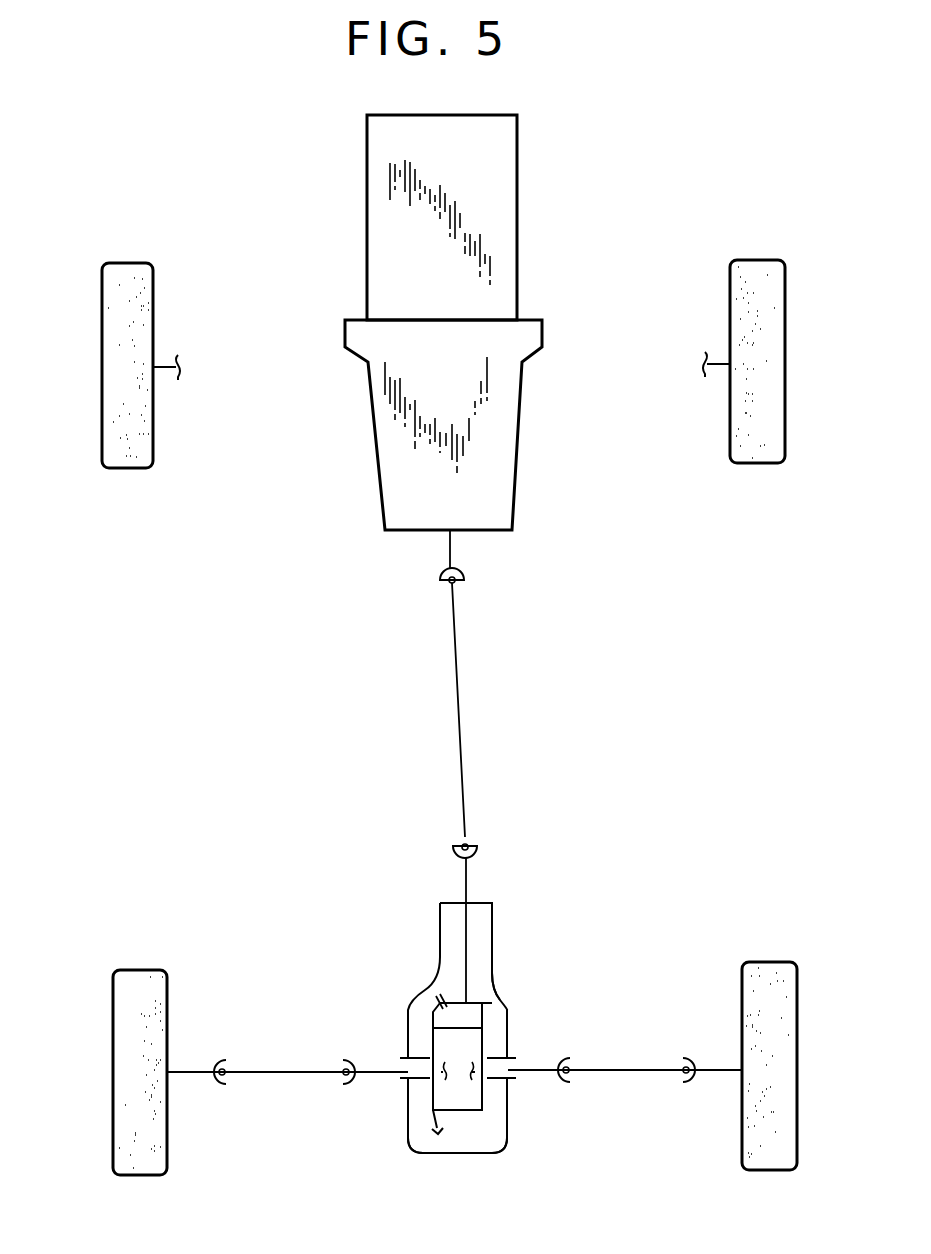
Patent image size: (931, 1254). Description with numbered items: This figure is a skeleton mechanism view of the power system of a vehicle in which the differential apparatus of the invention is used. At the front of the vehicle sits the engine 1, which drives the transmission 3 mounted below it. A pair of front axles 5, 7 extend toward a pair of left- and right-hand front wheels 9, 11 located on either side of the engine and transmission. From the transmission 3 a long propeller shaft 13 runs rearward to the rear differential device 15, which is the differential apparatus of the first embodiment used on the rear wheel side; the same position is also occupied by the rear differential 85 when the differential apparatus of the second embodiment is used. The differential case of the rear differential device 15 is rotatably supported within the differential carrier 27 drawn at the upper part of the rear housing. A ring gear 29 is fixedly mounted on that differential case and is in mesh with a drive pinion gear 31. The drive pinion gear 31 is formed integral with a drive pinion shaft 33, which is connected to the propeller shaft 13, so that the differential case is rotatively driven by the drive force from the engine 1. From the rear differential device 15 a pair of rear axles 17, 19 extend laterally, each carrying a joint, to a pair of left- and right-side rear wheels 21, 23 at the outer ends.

The engine 1 is at (514, 215).
The transmission 3 is at (507, 420).
The front axle 5 is at (178, 380).
The front axle 7 is at (705, 377).
The left-hand front wheel 9 is at (105, 322).
The right-hand front wheel 11 is at (773, 285).
The propeller shaft 13 is at (458, 722).
The rear differential device 15 is at (497, 1027).
The rear differential 85 is at (497, 1027).
The rear axle 17 is at (277, 1089).
The rear axle 19 is at (619, 1087).
The left-side rear wheel 21 is at (118, 1000).
The right-side rear wheel 23 is at (790, 992).
The differential carrier 27 is at (480, 903).
The ring gear 29 is at (434, 1007).
The drive pinion gear 31 is at (497, 991).
The drive pinion shaft 33 is at (467, 932).